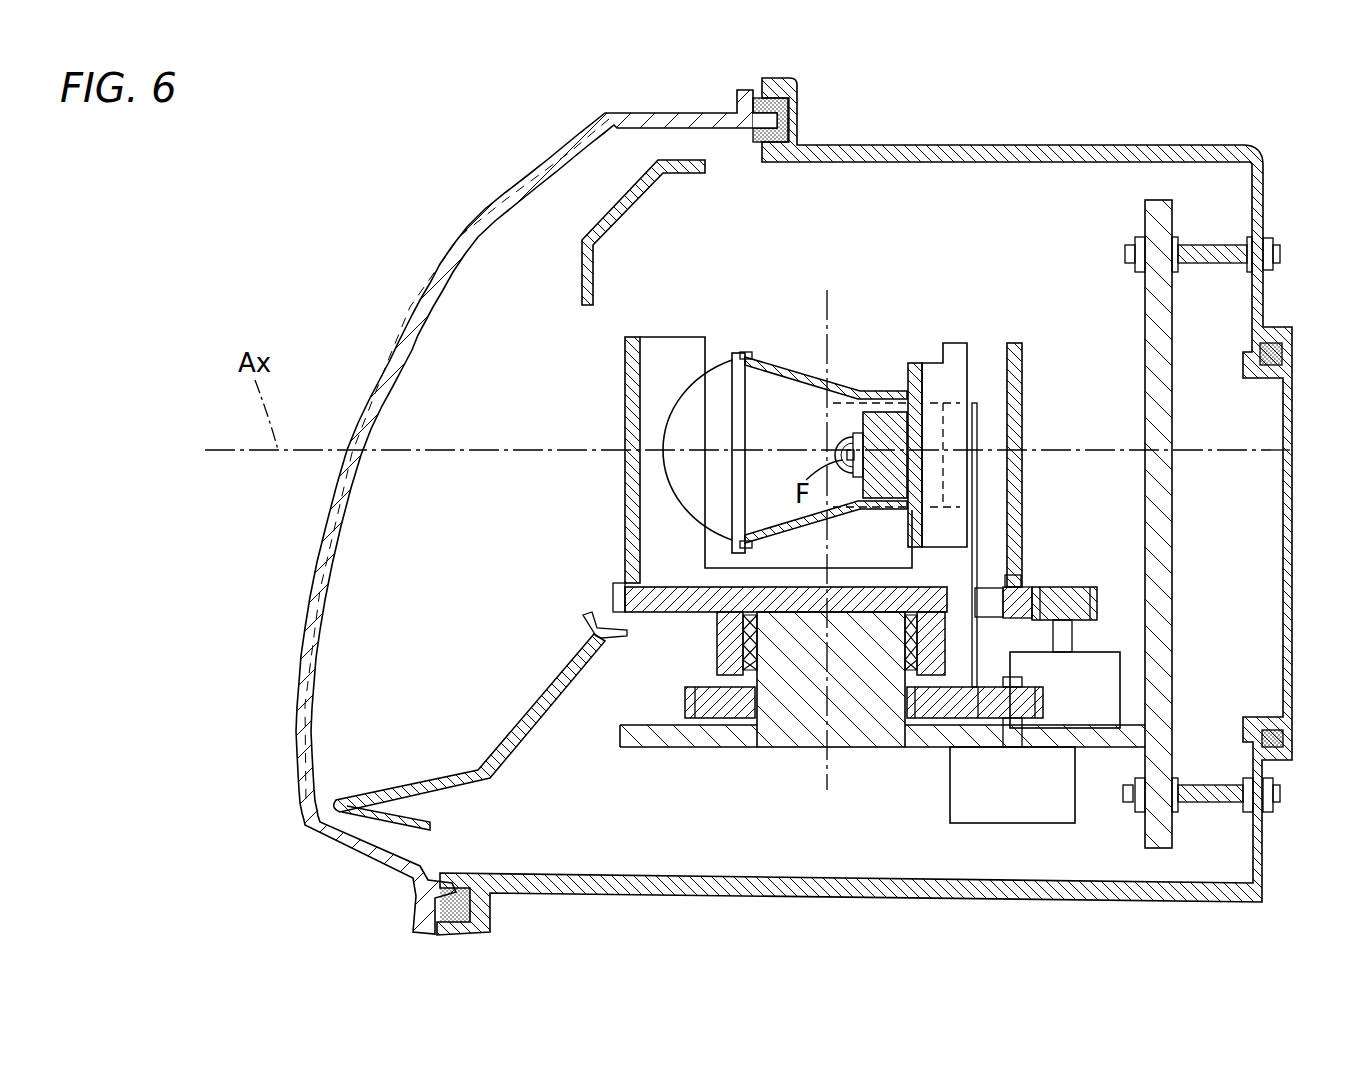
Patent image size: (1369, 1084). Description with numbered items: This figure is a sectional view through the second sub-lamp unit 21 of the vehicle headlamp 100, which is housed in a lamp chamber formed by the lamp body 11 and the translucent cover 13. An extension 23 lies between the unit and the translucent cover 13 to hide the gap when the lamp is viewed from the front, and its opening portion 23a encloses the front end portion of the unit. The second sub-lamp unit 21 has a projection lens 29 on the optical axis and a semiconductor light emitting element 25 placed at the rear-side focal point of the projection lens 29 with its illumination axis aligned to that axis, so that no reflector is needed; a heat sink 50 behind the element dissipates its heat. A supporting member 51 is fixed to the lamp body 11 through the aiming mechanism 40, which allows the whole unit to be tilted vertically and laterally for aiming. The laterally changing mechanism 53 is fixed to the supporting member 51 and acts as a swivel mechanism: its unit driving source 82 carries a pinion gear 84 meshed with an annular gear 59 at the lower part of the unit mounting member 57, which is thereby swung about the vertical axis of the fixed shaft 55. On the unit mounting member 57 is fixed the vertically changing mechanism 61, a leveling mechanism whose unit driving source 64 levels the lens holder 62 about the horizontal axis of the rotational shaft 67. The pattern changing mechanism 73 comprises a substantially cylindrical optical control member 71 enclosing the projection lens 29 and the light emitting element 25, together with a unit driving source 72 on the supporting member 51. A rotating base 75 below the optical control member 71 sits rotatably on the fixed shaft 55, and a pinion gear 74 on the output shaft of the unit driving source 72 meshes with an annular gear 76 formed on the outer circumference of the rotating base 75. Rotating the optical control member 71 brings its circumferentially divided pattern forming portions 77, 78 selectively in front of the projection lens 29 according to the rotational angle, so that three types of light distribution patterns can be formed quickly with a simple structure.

The vehicle headlamp 100 is at (1230, 145).
The lamp body 11 is at (1010, 150).
The translucent cover 13 is at (483, 212).
The second sub-lamp unit 21 is at (452, 383).
The extension 23 is at (530, 706).
The opening portion 23a is at (583, 305).
The semiconductor light emitting element 25 is at (846, 424).
The projection lens 29 is at (682, 392).
The aiming mechanism 40 is at (1207, 238).
The heat sink 50 is at (957, 360).
The supporting member 51 is at (1175, 432).
The laterally changing mechanism 53 is at (940, 758).
The fixed shaft 55 is at (808, 652).
The unit mounting member 57 is at (979, 556).
The annular gear 59 is at (685, 703).
The vertically changing mechanism 61 is at (897, 376).
The lens holder 62 is at (791, 366).
The unit driving source 64 is at (945, 455).
The rotational shaft 67 is at (835, 447).
The optical control member 71 is at (623, 488).
The unit driving source 72 is at (1107, 677).
The pattern changing mechanism 73 is at (1110, 583).
The pinion gear 74 is at (1078, 592).
The rotating base 75 is at (856, 590).
The annular gear 76 is at (613, 598).
The pattern forming portion 77 is at (625, 428).
The pattern forming portion 78 is at (1024, 390).
The unit driving source 82 is at (1020, 790).
The pinion gear 84 is at (1035, 704).